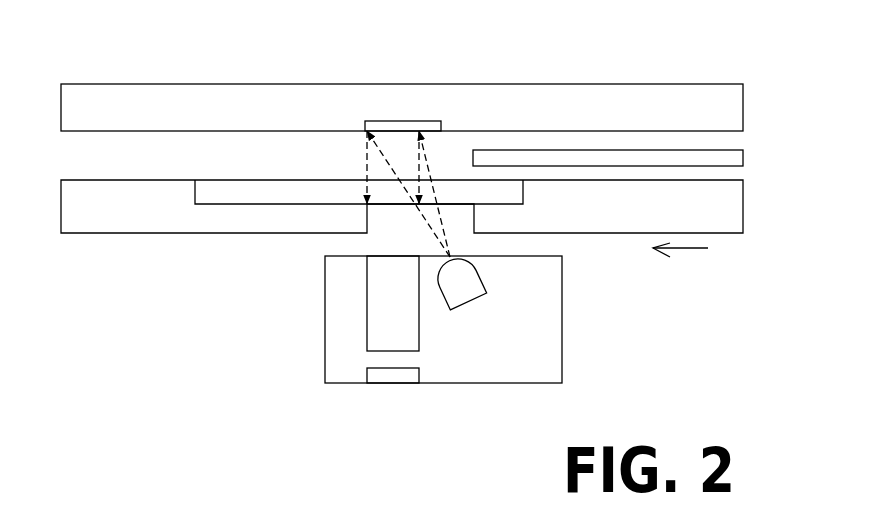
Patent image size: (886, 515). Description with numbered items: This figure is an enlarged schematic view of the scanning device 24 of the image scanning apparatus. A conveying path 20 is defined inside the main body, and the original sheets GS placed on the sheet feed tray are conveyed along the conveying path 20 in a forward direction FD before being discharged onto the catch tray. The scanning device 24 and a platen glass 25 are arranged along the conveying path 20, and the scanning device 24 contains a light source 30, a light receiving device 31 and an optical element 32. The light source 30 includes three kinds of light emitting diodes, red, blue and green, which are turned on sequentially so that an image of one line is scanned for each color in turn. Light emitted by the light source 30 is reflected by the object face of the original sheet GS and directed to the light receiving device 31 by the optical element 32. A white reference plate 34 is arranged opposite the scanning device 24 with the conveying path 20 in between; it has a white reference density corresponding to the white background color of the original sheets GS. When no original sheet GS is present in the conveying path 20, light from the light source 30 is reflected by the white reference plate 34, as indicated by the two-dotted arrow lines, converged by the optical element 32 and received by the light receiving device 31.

The conveying path 20 is at (722, 132).
The white reference plate 34 is at (387, 128).
The original sheet GS is at (740, 157).
The platen glass 25 is at (218, 195).
The scanning device 24 is at (435, 421).
The light source 30 is at (477, 297).
The light receiving device 31 is at (417, 373).
The optical element 32 is at (412, 338).
The forward direction FD is at (688, 248).